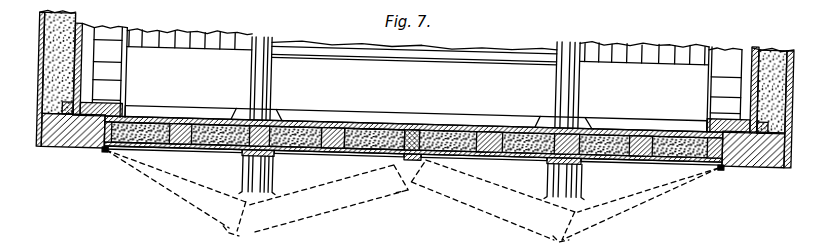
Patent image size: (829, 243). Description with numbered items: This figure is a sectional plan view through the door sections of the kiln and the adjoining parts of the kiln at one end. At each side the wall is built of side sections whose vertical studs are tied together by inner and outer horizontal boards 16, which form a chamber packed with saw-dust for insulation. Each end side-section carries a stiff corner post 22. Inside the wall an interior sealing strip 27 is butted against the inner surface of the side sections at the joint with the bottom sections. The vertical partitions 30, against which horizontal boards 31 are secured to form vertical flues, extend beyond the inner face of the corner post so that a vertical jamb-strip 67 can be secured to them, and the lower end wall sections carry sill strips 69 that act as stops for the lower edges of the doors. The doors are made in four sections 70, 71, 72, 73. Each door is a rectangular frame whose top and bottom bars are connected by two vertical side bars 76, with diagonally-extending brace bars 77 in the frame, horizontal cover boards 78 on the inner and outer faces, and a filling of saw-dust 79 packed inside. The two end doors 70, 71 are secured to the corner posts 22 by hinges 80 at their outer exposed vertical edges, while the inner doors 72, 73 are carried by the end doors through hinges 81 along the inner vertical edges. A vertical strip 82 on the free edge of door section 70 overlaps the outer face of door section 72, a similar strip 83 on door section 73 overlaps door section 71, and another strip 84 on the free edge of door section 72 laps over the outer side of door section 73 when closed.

The horizontal boards 16 is at (415, 84).
The corner post 22 is at (67, 140).
The interior sealing strip 27 is at (82, 28).
The vertical partition 30 is at (108, 36).
The horizontal boards 31 is at (127, 77).
The vertical jamb-strip 67 is at (128, 117).
The sill strip 69 is at (433, 116).
The door section 70 is at (203, 150).
The door section 71 is at (617, 160).
The door section 72 is at (325, 148).
The door section 73 is at (505, 152).
The vertical side bars 76 is at (270, 122).
The brace bars 77 is at (332, 130).
The cover boards 78 is at (363, 130).
The saw-dust filling 79 is at (378, 142).
The hinges 80 is at (105, 150).
The hinges 81 is at (258, 120).
The vertical strip 82 is at (248, 156).
The vertical strip 83 is at (557, 163).
The vertical strip 84 is at (420, 156).